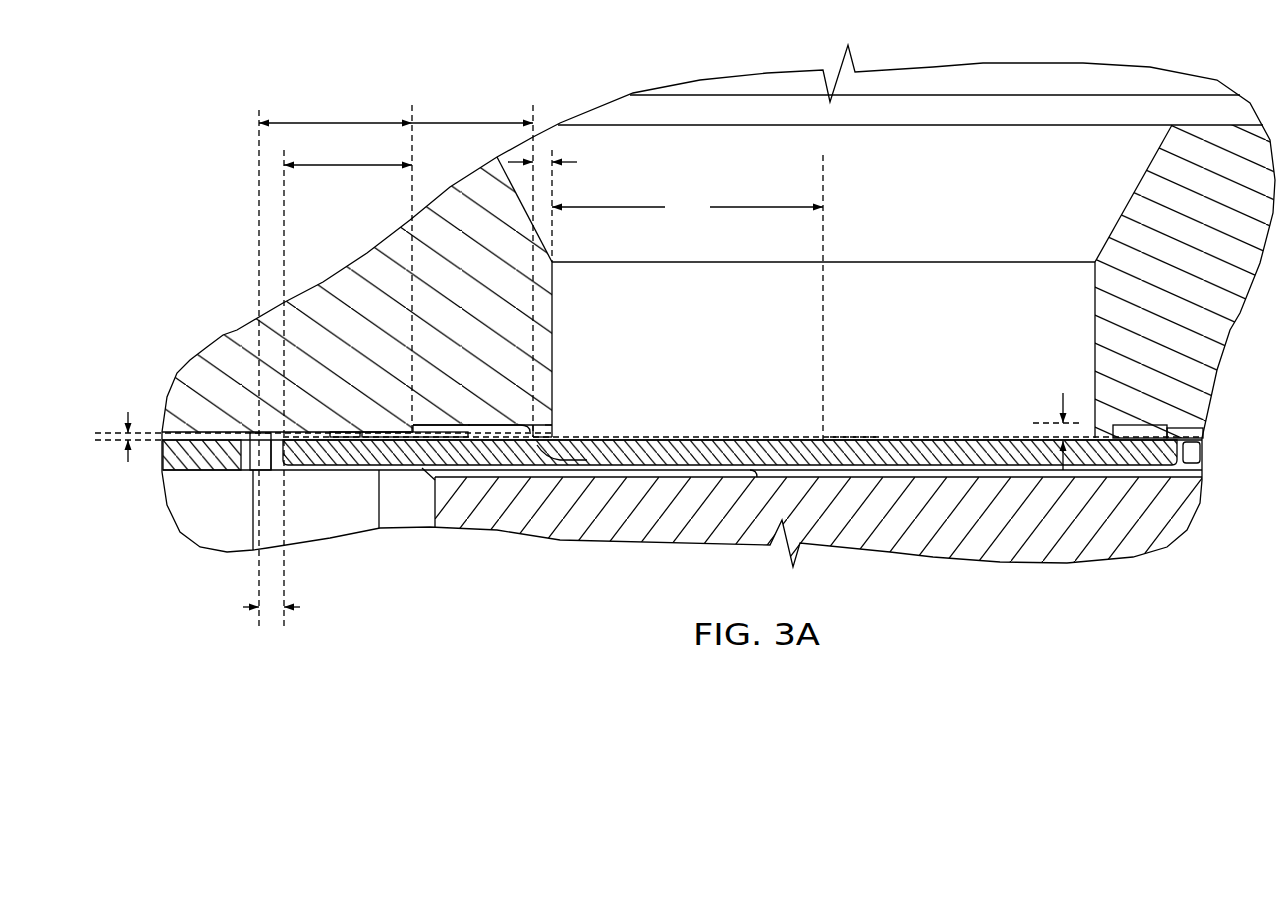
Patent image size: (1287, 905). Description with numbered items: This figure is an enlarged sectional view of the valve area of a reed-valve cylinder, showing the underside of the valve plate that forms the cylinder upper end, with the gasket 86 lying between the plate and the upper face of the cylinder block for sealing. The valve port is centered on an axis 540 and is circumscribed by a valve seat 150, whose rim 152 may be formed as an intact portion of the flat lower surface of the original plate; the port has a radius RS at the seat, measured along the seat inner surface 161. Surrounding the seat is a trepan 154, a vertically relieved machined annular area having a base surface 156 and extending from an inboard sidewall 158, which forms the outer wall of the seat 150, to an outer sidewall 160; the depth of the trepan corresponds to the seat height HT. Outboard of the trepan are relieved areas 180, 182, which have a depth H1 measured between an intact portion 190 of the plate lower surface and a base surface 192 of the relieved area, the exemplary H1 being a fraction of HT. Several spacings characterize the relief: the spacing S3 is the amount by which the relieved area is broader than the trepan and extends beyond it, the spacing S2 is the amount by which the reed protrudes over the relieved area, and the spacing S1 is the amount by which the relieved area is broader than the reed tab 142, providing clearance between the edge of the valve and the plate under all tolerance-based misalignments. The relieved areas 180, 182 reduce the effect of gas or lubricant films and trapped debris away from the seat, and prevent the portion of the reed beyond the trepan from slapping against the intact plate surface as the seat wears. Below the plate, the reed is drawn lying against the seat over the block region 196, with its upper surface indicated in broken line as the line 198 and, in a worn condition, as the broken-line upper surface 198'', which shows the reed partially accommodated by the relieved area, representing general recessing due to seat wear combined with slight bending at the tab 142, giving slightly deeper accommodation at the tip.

The port axis 540 is at (823, 187).
The outer sidewall of trepan 160 is at (453, 425).
The relieved area 180 is at (334, 446).
The gasket 86 is at (240, 468).
The intact portion of the plate lower surface 190 is at (193, 462).
The base surface of the relieved area 192 is at (267, 472).
The tab 142 is at (303, 458).
The trepan 154 is at (520, 442).
The base block 196 is at (693, 470).
The thin film 198 is at (742, 407).
The reed upper surface 198'' is at (882, 409).
The base surface of trepan 156 is at (515, 424).
The inboard sidewall of trepan 158 is at (514, 421).
The valve seat 150 is at (535, 432).
The seat inner surface 161 is at (552, 427).
The rim of valve seat 152 is at (567, 460).
The relieved area 182 is at (1190, 442).
The spacing S3 is at (371, 120).
The spacing S2 is at (371, 163).
The spacing S1 is at (286, 612).
The seat radius RS is at (687, 208).
The relieved area depth H1 is at (128, 436).
The seat height HT is at (1060, 435).